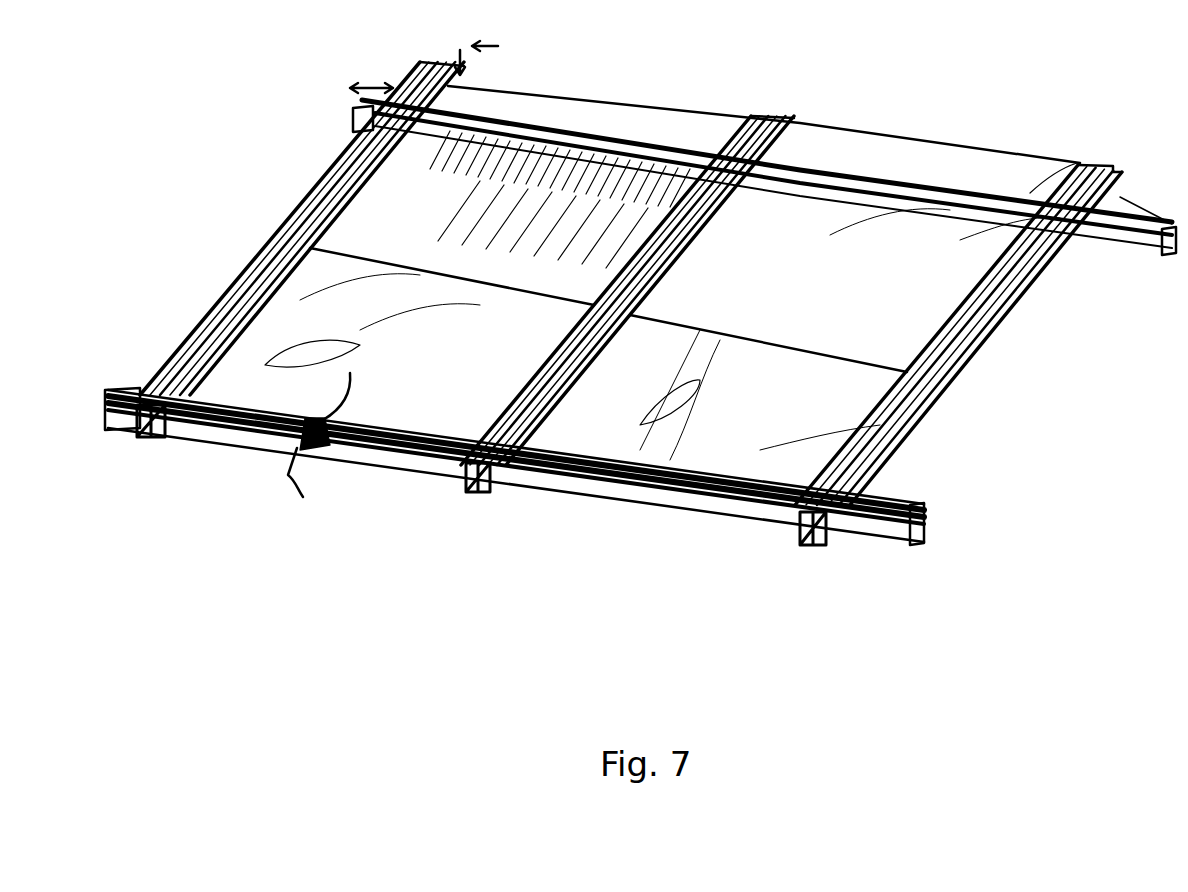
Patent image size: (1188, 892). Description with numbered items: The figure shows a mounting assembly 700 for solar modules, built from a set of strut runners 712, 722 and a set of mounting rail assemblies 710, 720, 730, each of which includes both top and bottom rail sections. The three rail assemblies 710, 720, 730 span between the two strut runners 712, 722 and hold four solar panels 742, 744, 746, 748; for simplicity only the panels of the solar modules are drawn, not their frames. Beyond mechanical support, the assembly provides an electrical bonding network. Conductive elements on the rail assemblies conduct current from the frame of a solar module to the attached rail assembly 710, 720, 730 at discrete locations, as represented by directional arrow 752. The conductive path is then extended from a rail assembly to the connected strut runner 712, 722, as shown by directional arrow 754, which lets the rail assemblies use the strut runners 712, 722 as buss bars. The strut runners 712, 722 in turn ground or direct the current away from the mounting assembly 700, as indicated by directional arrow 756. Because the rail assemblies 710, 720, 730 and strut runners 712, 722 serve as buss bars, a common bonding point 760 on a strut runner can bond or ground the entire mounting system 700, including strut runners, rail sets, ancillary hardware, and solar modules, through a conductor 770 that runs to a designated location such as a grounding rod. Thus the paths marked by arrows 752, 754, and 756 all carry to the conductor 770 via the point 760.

The mounting assembly 700 is at (978, 400).
The mounting rail assembly 710 is at (284, 230).
The strut runner 712 is at (612, 494).
The mounting rail assembly 720 is at (750, 116).
The strut runner 722 is at (840, 165).
The mounting rail assembly 730 is at (1082, 163).
The solar panel 742 is at (548, 251).
The solar panel 744 is at (888, 304).
The solar panel 746 is at (828, 418).
The solar panel 748 is at (494, 361).
The directional arrow 752 is at (496, 46).
The directional arrow 754 is at (494, 69).
The directional arrow 756 is at (362, 86).
The common bonding point 760 is at (315, 453).
The conductor 770 is at (288, 475).